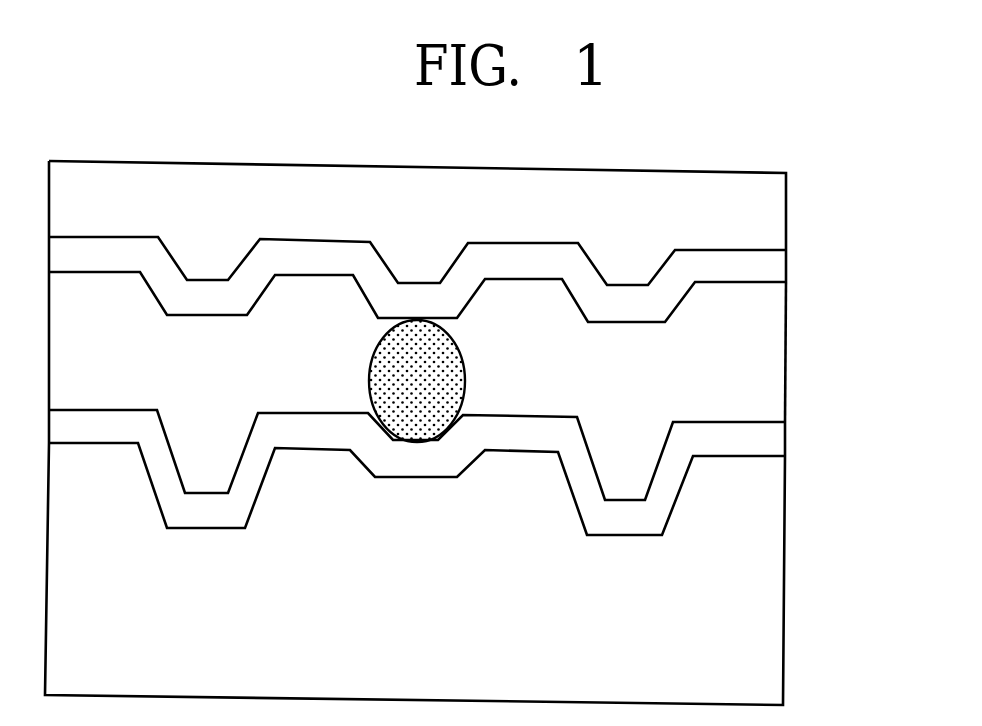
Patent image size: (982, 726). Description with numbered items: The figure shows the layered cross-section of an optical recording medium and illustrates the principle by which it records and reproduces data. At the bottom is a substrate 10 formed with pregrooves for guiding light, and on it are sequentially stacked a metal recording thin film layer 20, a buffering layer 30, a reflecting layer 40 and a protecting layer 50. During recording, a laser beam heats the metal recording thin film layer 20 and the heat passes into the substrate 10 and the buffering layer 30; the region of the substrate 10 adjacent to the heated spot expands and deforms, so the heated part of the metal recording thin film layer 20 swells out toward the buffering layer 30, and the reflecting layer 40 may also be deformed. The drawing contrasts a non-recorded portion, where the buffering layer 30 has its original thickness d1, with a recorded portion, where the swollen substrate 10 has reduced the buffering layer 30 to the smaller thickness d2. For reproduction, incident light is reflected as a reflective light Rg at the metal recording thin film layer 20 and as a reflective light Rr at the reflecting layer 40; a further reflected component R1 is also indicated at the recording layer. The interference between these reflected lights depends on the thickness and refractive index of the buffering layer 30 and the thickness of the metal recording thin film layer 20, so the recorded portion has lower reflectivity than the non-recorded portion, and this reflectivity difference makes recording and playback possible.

The substrate 10 is at (770, 573).
The metal recording thin film layer 20 is at (772, 437).
The buffering layer 30 is at (772, 368).
The reflecting layer 40 is at (772, 272).
The protecting layer 50 is at (772, 210).
The buffering layer thickness before recording d1 is at (208, 492).
The buffering layer thickness after recording d2 is at (417, 326).
The reflective light from reflecting layer Rr is at (626, 322).
The region R1 is at (507, 458).
The reflective light from metal recording thin film layer Rg is at (623, 535).